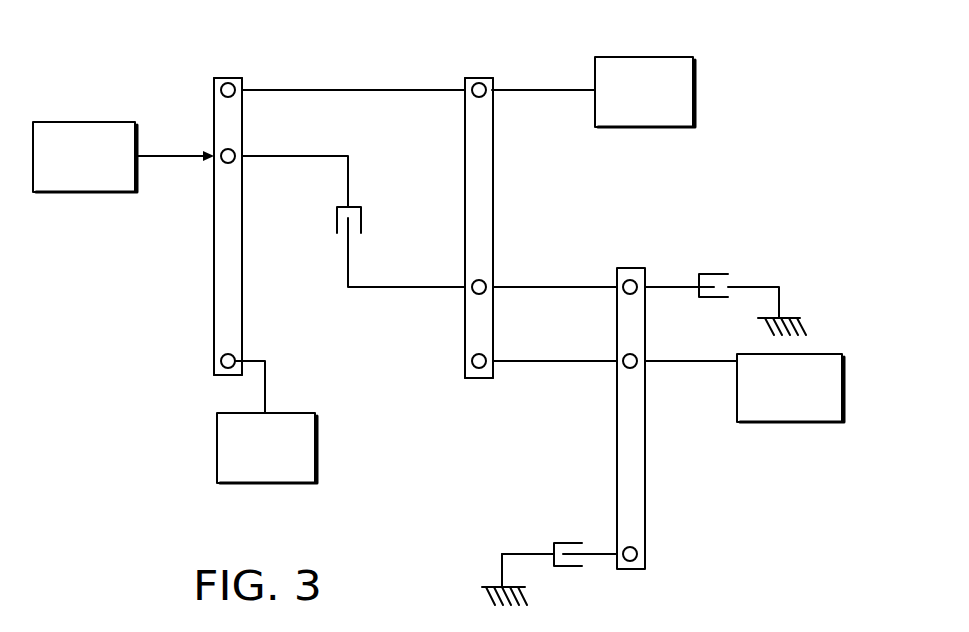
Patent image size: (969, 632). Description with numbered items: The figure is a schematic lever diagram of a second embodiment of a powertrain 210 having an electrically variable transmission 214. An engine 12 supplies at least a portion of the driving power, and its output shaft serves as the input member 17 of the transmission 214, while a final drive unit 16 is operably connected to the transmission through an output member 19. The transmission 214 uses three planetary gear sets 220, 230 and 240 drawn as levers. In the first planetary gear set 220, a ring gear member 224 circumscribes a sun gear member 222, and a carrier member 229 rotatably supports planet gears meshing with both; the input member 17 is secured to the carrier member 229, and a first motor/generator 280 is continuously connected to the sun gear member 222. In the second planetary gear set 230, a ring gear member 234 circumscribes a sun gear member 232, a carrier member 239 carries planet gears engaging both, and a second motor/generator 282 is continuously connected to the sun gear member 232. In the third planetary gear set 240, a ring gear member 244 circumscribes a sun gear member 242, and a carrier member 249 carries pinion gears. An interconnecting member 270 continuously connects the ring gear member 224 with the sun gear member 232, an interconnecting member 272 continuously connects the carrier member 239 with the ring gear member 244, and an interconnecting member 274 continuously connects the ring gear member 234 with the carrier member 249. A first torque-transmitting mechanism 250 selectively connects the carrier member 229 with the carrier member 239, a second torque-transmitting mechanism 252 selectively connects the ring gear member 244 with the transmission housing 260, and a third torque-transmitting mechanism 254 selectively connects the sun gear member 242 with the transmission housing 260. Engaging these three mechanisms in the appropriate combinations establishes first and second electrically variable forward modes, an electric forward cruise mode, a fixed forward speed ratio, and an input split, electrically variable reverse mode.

The engine 12 is at (96, 100).
The final drive unit 16 is at (780, 436).
The input member 17 is at (170, 152).
The output member 19 is at (690, 363).
The powertrain 210 is at (253, 52).
The transmission 214 is at (380, 53).
The planetary gear set 220 is at (184, 367).
The sun gear member 222 is at (222, 355).
The ring gear member 224 is at (222, 84).
The carrier member 229 is at (222, 162).
The planetary gear set 230 is at (451, 370).
The sun gear member 232 is at (473, 84).
The ring gear member 234 is at (473, 355).
The carrier member 239 is at (473, 281).
The planetary gear set 240 is at (662, 554).
The sun gear member 242 is at (637, 549).
The ring gear member 244 is at (624, 281).
The carrier member 249 is at (624, 355).
The first torque-transmitting mechanism 250 is at (323, 226).
The second torque-transmitting mechanism 252 is at (722, 259).
The third torque-transmitting mechanism 254 is at (558, 532).
The transmission housing 260 is at (795, 315).
The interconnecting member 270 is at (308, 88).
The interconnecting member 272 is at (530, 285).
The interconnecting member 274 is at (530, 358).
The first motor/generator 280 is at (240, 483).
The second motor/generator 282 is at (663, 57).